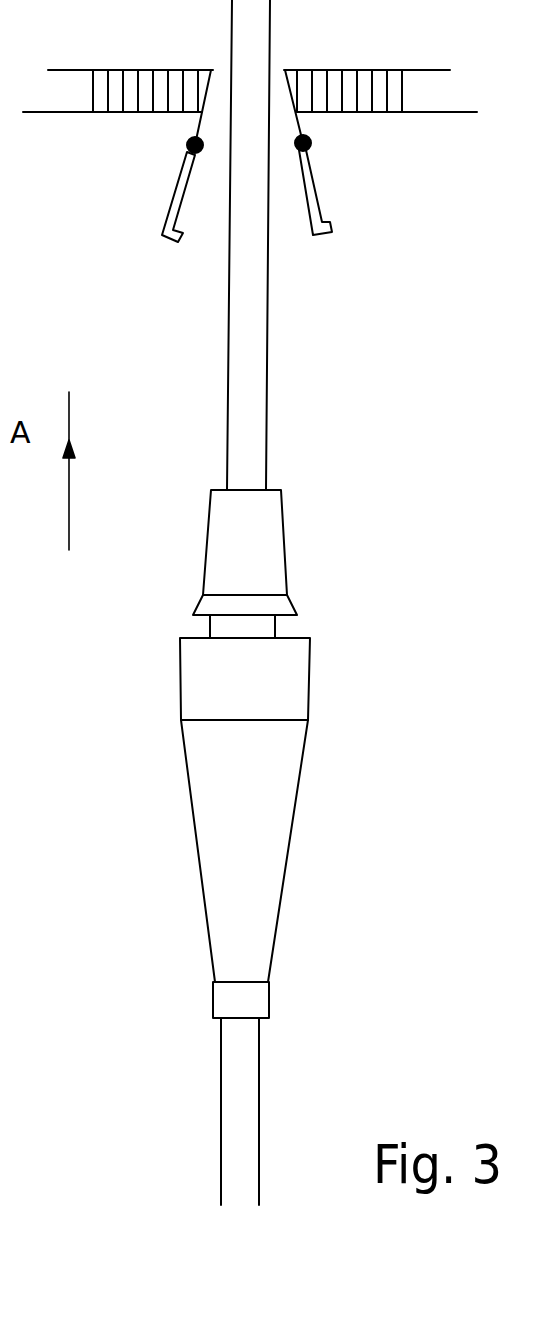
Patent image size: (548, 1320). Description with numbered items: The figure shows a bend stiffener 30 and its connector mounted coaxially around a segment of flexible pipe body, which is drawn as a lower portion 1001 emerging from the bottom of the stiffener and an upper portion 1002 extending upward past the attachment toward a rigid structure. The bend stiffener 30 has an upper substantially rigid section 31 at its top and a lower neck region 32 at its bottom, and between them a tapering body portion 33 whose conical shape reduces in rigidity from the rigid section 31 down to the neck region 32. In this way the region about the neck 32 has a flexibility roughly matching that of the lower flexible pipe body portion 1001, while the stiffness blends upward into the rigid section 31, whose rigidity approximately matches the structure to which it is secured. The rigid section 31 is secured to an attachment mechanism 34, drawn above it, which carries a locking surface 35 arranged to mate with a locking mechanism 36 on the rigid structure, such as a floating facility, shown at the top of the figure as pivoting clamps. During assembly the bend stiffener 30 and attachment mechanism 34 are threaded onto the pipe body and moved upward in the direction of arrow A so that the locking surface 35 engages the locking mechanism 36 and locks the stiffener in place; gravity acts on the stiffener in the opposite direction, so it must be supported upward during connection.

The bend stiffener 30 is at (271, 754).
The upper substantially rigid section 31 is at (293, 685).
The lower neck region 32 is at (257, 1007).
The tapering body portion 33 is at (223, 855).
The attachment mechanism 34 is at (268, 530).
The locking surface 35 is at (283, 607).
The locking mechanism 36 is at (323, 178).
The lower portion of flexible pipe body 1001 is at (240, 1110).
The upper portion of flexible pipe body 1002 is at (253, 308).